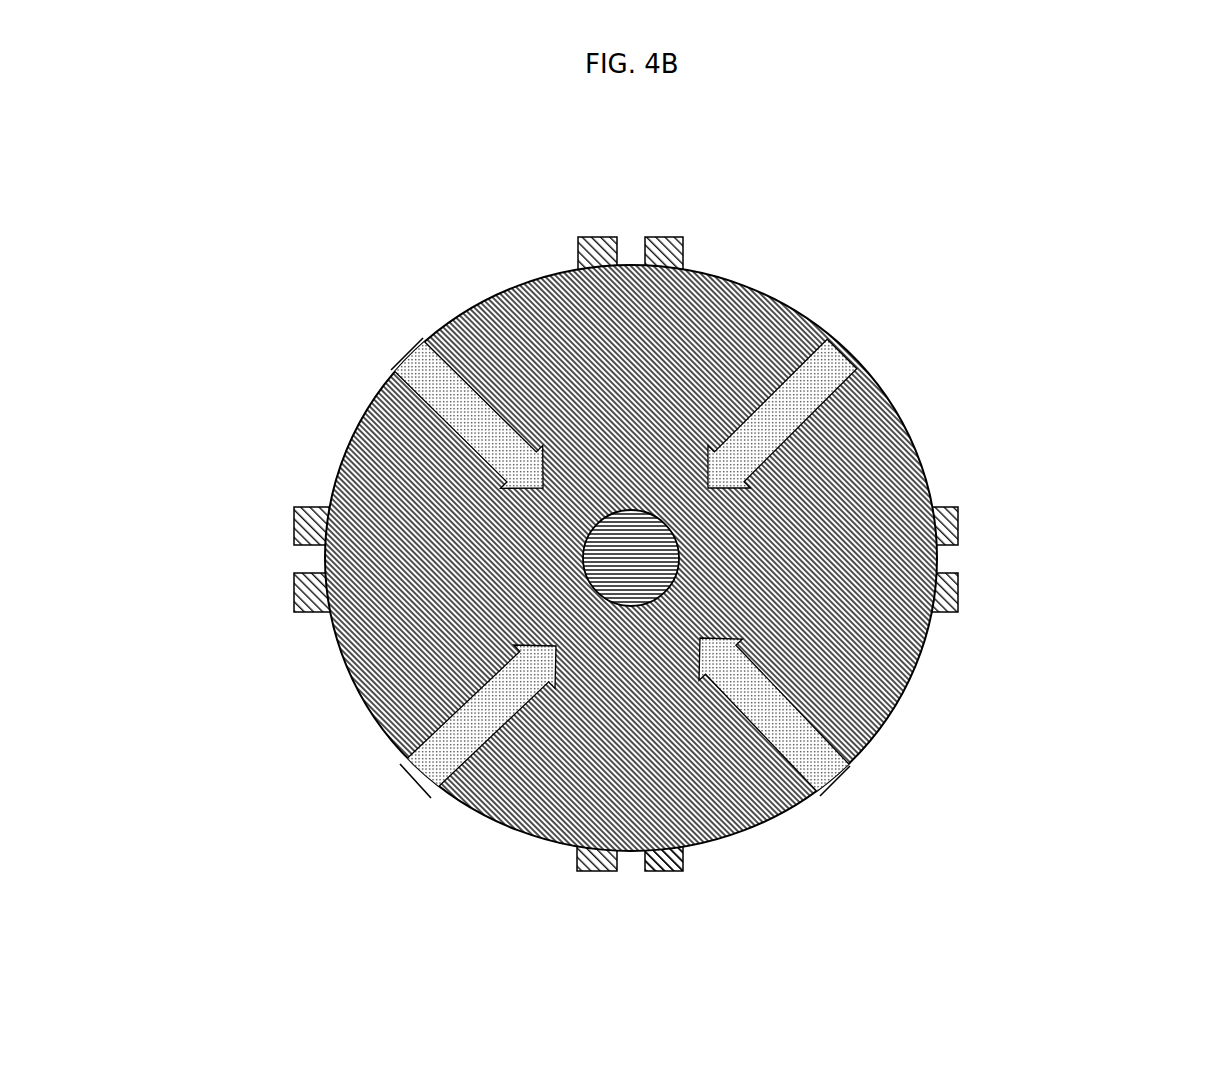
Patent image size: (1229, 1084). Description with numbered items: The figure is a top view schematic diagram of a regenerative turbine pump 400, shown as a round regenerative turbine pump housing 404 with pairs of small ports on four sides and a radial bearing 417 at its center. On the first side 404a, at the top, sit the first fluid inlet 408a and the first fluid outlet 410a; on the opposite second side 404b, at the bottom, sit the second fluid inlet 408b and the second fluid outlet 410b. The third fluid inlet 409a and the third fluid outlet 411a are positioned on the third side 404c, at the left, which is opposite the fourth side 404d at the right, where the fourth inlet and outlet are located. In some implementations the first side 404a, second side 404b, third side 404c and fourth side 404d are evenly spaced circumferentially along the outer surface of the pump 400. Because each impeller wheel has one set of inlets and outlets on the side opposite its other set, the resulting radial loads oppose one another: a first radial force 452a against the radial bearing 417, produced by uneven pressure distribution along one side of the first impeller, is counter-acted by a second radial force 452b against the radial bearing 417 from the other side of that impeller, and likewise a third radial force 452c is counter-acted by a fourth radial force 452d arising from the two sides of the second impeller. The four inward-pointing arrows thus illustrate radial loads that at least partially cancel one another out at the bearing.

The regenerative turbine pump 400 is at (1030, 378).
The regenerative turbine pump housing 404 is at (650, 399).
The first side of the pump housing 404a is at (619, 192).
The second side of the pump housing 404b is at (609, 894).
The third side of the pump housing 404c is at (252, 555).
The fourth side of the pump housing 404d is at (984, 554).
The first fluid inlet 408a is at (583, 229).
The second fluid inlet 408b is at (658, 863).
The third fluid inlet 409a is at (287, 585).
The first fluid outlet 410a is at (660, 229).
The second fluid outlet 410b is at (587, 863).
The third fluid outlet 411a is at (287, 516).
The radial bearing 417 is at (600, 565).
The first radial force 452a is at (838, 344).
The second radial force 452b is at (407, 772).
The third radial force 452c is at (397, 346).
The fourth radial force 452d is at (828, 773).